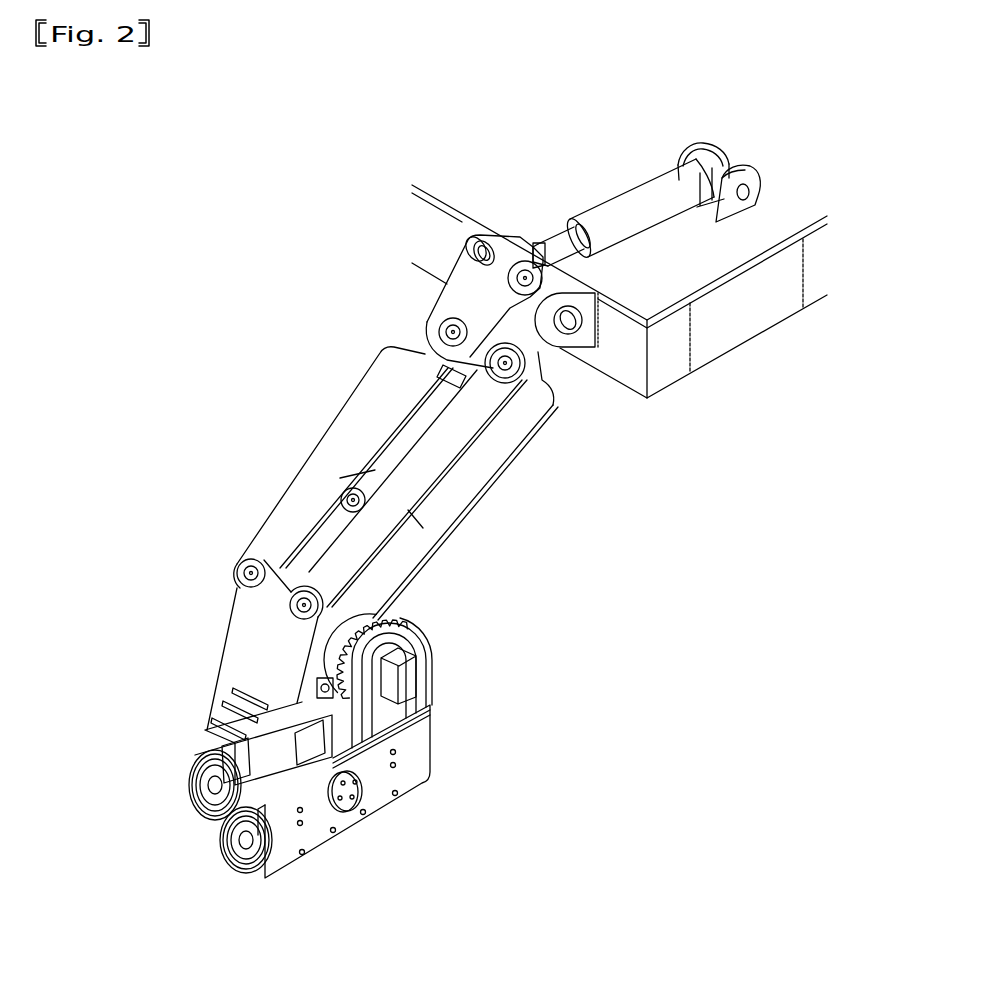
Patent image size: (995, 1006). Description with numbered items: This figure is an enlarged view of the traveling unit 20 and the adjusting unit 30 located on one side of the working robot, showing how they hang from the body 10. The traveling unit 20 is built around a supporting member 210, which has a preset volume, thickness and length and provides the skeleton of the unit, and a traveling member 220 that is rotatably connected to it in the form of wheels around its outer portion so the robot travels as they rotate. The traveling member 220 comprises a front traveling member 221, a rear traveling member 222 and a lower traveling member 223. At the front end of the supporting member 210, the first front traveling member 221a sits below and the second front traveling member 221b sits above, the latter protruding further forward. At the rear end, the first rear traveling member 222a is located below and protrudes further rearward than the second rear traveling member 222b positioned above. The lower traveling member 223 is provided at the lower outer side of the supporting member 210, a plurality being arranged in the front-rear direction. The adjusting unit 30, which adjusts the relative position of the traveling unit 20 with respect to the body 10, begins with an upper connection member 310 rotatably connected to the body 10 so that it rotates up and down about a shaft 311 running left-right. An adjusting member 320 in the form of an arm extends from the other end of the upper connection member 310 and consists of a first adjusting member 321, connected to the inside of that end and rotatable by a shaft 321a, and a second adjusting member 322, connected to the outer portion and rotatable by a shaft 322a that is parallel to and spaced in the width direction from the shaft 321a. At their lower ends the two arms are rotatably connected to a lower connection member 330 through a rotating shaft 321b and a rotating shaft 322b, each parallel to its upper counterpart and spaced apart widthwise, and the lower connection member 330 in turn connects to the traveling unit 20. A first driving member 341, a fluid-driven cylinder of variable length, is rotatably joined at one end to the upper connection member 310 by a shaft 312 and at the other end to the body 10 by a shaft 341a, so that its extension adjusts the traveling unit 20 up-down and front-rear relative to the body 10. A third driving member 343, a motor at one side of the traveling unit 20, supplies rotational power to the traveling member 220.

The body 10 is at (665, 378).
The traveling unit 20 is at (383, 794).
The adjusting unit 30 is at (488, 428).
The supporting member 210 is at (278, 865).
The traveling member 220 is at (439, 782).
The front traveling member 221 is at (406, 827).
The first front traveling member 221a is at (265, 827).
The second front traveling member 221b is at (236, 757).
The rear traveling member 222 is at (468, 680).
The first rear traveling member 222a is at (427, 712).
The second rear traveling member 222b is at (412, 618).
The lower traveling member 223 is at (390, 803).
The upper connection member 310 is at (431, 259).
The shaft 311 is at (568, 338).
The shaft 312 is at (528, 261).
The adjusting member 320 is at (344, 473).
The first adjusting member 321 is at (293, 454).
The shaft 321a is at (440, 332).
The rotating shaft 321b is at (237, 573).
The second adjusting member 322 is at (344, 486).
The shaft 322a is at (497, 378).
The rotating shaft 322b is at (290, 604).
The lower connection member 330 is at (232, 653).
The first driving member 341 is at (695, 191).
The shaft 341a is at (752, 190).
The third driving member 343 is at (405, 671).